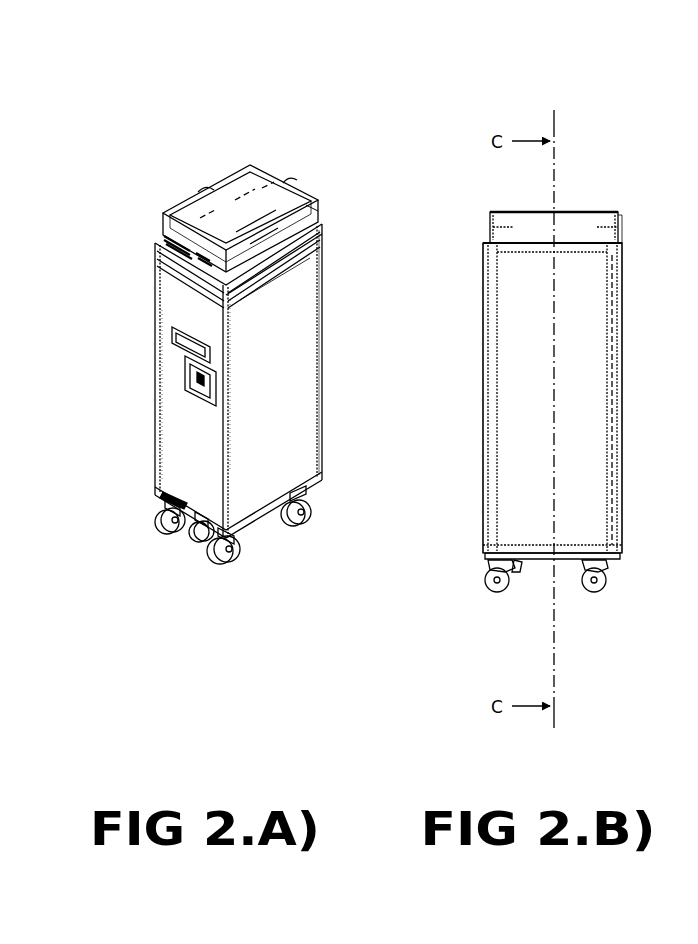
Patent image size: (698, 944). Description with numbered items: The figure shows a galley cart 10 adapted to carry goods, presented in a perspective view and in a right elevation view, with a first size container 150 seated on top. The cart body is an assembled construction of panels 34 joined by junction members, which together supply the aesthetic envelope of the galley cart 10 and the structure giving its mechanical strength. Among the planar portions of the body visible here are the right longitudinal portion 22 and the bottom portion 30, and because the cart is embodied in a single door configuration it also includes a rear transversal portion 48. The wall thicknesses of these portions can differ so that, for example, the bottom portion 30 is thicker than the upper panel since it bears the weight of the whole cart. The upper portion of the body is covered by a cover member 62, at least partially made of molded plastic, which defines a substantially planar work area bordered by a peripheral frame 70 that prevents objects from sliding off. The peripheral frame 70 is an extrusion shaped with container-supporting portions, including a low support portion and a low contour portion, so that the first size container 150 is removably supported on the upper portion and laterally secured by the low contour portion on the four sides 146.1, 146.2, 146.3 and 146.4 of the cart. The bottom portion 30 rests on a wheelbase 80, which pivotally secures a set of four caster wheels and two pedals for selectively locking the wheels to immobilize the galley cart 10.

In FIG. 2A, the galley cart 10 is at (170, 130).
In FIG. 2B, the galley cart 10 is at (472, 180).
In FIG. 2A, the right longitudinal portion 22 is at (271, 414).
In FIG. 2B, the right longitudinal portion 22 is at (565, 416).
In FIG. 2A, the bottom portion 30 is at (246, 600).
In FIG. 2B, the bottom portion 30 is at (552, 401).
In FIG. 2A, the panels 34 is at (181, 457).
In FIG. 2B, the panels 34 is at (515, 490).
In FIG. 2A, the rear transversal portion 48 is at (337, 424).
In FIG. 2B, the rear transversal portion 48 is at (632, 415).
In FIG. 2A, the cover member 62 is at (337, 230).
In FIG. 2A, the peripheral frame 70 is at (298, 250).
In FIG. 2B, the peripheral frame 70 is at (607, 253).
In FIG. 2A, the wheelbase 80 is at (180, 555).
In FIG. 2B, the wheelbase 80 is at (519, 598).
In FIG. 2A, the side of the galley cart 146.1 is at (165, 286).
In FIG. 2B, the side of the galley cart 146.1 is at (476, 467).
In FIG. 2A, the side of the galley cart 146.2 is at (158, 200).
In FIG. 2A, the side of the galley cart 146.3 is at (293, 272).
In FIG. 2B, the side of the galley cart 146.3 is at (553, 344).
In FIG. 2A, the side of the galley cart 146.4 is at (322, 193).
In FIG. 2B, the side of the galley cart 146.4 is at (642, 245).
In FIG. 2A, the first size container 150 is at (232, 175).
In FIG. 2B, the first size container 150 is at (602, 212).